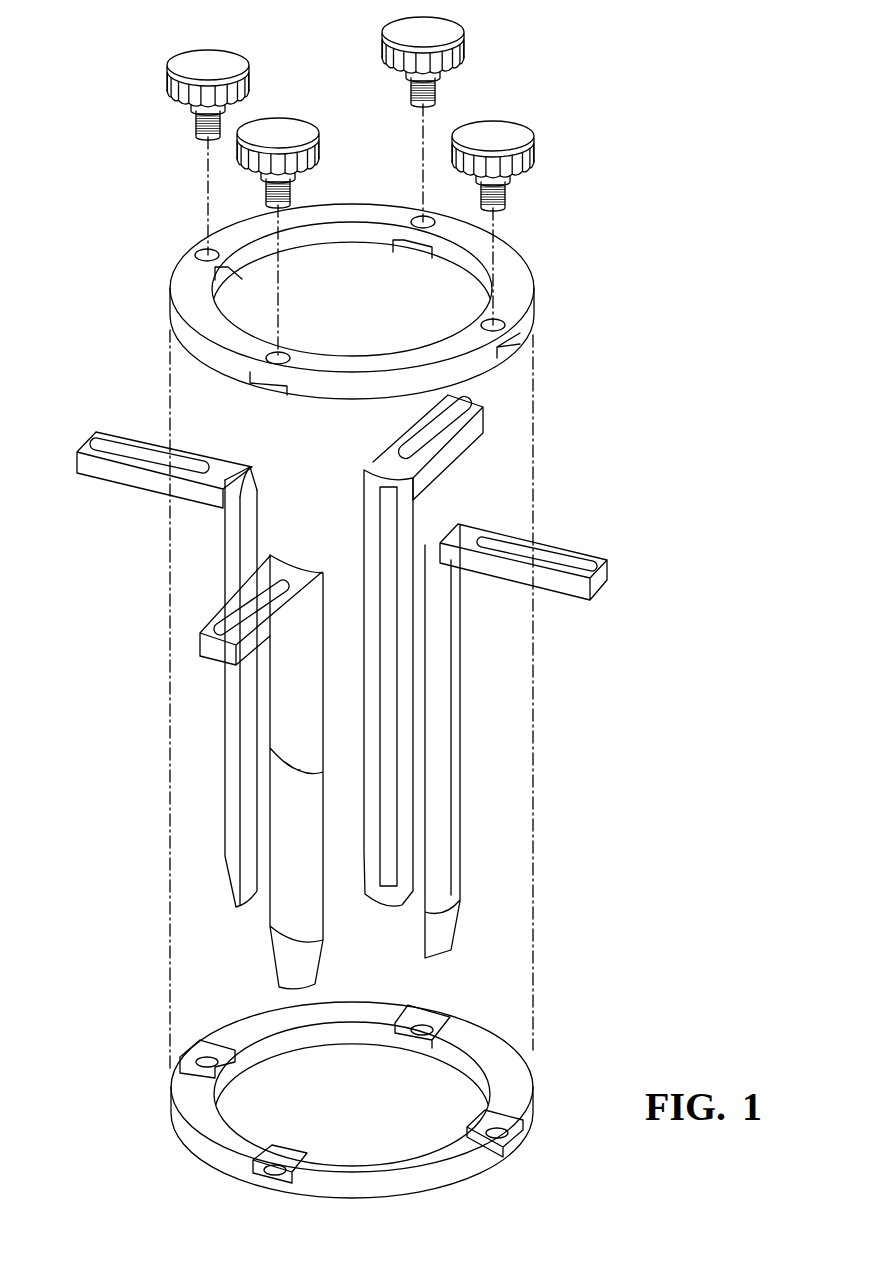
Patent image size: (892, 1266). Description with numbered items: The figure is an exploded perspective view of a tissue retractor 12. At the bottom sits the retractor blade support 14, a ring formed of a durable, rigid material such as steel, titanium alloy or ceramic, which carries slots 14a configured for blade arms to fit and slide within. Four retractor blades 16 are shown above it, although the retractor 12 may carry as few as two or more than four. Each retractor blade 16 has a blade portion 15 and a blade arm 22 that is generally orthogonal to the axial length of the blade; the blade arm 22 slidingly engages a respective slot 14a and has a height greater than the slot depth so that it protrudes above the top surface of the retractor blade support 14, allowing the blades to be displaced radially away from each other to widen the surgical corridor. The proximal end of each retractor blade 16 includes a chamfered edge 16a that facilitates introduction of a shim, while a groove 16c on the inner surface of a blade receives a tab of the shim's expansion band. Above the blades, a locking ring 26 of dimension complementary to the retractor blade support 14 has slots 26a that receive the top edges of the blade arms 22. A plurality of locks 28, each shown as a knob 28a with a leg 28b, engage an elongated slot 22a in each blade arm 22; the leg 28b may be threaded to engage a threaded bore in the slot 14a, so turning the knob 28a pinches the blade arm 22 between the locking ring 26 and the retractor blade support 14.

The retractor 12 is at (100, 80).
The retractor blade support 14 is at (345, 1090).
The slot 14a is at (205, 1048).
The blade portion 15 is at (180, 687).
The retractor blade 16 is at (307, 677).
The chamfered edge 16a is at (238, 482).
The groove 16c is at (374, 528).
The blade arm 22 is at (130, 436).
The elongated slot 22a is at (105, 440).
The locking ring 26 is at (394, 291).
The slot 26a is at (532, 348).
The lock 28 is at (489, 62).
The knob 28a is at (442, 28).
The leg 28b is at (452, 80).